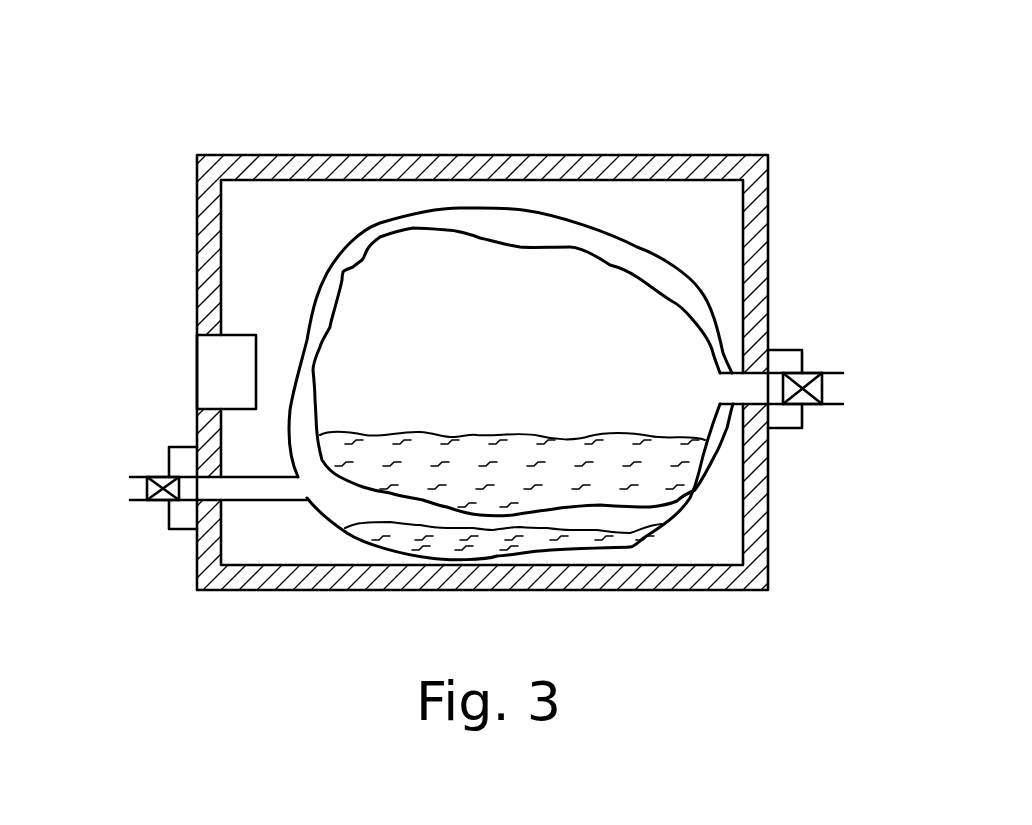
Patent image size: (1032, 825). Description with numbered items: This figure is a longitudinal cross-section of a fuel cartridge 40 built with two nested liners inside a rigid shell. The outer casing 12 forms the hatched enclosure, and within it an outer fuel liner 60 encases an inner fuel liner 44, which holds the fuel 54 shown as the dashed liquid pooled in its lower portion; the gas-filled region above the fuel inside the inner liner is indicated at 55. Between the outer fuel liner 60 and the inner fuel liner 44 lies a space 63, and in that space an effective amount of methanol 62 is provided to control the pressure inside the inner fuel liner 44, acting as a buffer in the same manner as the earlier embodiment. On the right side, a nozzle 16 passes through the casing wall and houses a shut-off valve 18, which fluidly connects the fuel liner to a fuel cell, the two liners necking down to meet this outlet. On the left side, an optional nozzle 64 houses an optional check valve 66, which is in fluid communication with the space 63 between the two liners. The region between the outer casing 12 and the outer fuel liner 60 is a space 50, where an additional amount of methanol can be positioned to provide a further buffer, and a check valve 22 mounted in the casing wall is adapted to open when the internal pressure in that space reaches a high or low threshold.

The outer casing 12 is at (441, 157).
The nozzle 16 is at (788, 350).
The shut-off valve 18 is at (820, 405).
The check valve 22 is at (213, 366).
The fuel cartridge 40 is at (743, 93).
The inner fuel liner 44 is at (607, 263).
The space 50 is at (272, 231).
The fuel 54 is at (680, 470).
The bladder interior gas space 55 is at (620, 342).
The outer fuel liner 60 is at (523, 210).
The methanol 62 is at (637, 547).
The space 63 is at (530, 530).
The nozzle 64 is at (182, 517).
The check valve 66 is at (157, 500).